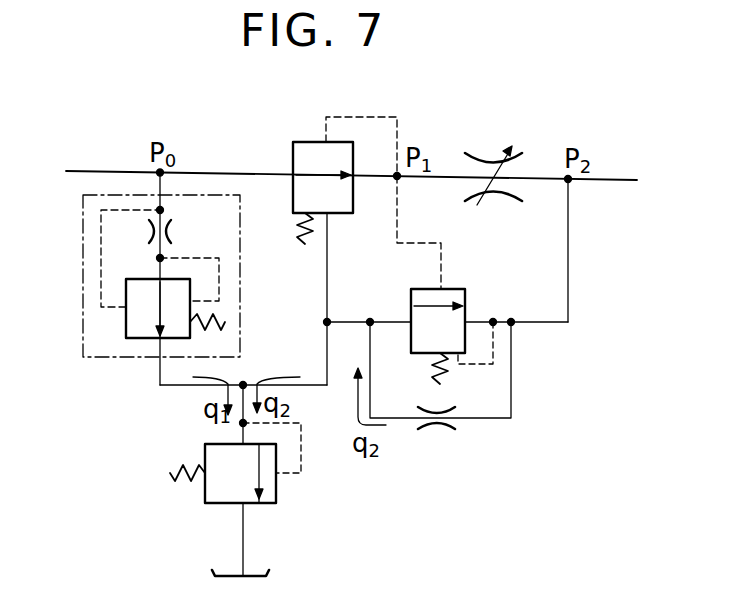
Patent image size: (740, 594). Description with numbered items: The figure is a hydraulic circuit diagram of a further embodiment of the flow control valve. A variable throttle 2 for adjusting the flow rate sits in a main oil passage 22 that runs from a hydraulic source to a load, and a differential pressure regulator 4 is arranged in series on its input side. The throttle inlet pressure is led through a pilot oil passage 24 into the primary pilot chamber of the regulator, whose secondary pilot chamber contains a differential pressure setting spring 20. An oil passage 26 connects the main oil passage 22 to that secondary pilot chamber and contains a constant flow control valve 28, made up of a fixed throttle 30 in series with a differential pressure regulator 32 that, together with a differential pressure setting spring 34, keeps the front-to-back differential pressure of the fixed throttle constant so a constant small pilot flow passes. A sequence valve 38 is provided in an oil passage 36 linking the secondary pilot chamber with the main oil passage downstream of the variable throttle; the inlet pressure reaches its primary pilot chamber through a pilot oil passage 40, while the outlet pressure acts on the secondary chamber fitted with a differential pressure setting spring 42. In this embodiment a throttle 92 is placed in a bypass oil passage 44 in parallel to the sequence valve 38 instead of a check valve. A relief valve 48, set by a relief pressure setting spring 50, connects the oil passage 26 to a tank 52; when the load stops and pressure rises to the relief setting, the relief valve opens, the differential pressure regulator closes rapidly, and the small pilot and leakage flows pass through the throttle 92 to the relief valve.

The variable throttle 2 is at (488, 156).
The differential pressure regulator 4 is at (300, 142).
The differential pressure setting spring 20 is at (302, 244).
The main oil passage 22 is at (104, 171).
The pilot oil passage 24 is at (369, 116).
The oil passage 26 is at (180, 386).
The constant flow control valve 28 is at (83, 226).
The fixed throttle 30 is at (172, 229).
The differential pressure regulator 32 is at (126, 326).
The differential pressure setting spring 34 is at (212, 329).
The oil passage 36 is at (568, 266).
The sequence valve 38 is at (455, 289).
The pilot oil passage 40 is at (397, 207).
The differential pressure setting spring 42 is at (433, 371).
The bypass oil passage 44 is at (511, 372).
The relief valve 48 is at (276, 490).
The relief pressure setting spring 50 is at (178, 484).
The tank 52 is at (268, 569).
The throttle 92 is at (437, 429).